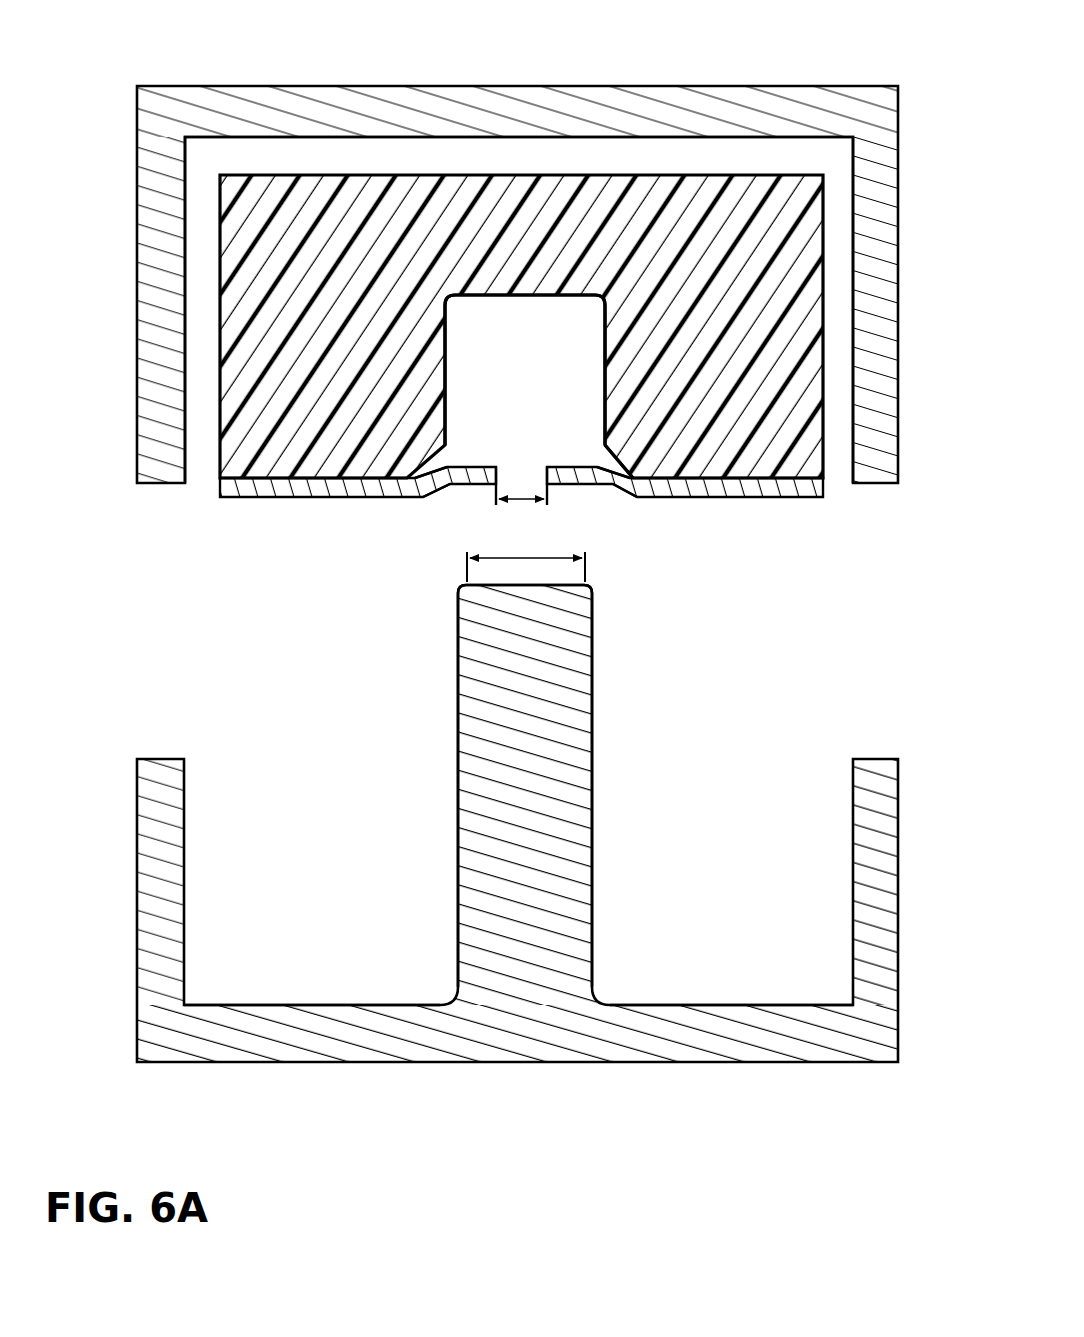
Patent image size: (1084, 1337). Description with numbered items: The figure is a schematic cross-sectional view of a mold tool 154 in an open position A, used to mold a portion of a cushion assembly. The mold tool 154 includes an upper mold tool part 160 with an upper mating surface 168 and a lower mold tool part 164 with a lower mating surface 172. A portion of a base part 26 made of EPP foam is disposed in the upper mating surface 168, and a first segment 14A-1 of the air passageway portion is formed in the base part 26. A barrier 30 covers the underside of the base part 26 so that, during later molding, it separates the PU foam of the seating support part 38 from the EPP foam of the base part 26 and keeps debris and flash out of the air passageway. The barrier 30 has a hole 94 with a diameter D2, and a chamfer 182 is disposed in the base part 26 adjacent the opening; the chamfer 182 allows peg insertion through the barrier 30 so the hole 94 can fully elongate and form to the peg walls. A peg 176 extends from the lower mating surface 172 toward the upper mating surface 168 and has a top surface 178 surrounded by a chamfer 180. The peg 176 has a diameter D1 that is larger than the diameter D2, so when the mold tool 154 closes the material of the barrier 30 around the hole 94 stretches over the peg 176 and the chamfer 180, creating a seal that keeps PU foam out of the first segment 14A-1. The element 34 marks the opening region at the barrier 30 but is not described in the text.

The mold tool 154 is at (517, 248).
The upper mold tool part 160 is at (508, 108).
The upper mating surface 168 is at (627, 137).
The first segment of the air passageway portion 14A-1 is at (515, 338).
The base part 26 is at (591, 254).
The seating support part 38 is at (742, 477).
The barrier 30 is at (526, 483).
The chamfer 182 is at (420, 497).
The opening 34 is at (498, 477).
The hole 94 is at (522, 475).
The diameter of the hole D2 is at (520, 505).
The lower mold tool part 164 is at (517, 850).
The peg 176 is at (560, 792).
The lower mating surface 172 is at (717, 1005).
The top surface of the peg 178 is at (537, 583).
The chamfer 180 is at (457, 588).
The diameter of the peg D1 is at (500, 558).
The open position A is at (85, 456).